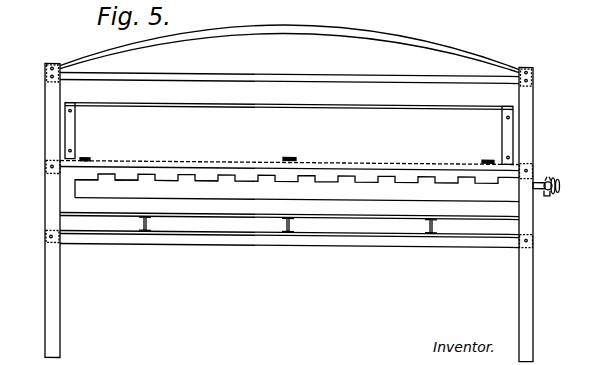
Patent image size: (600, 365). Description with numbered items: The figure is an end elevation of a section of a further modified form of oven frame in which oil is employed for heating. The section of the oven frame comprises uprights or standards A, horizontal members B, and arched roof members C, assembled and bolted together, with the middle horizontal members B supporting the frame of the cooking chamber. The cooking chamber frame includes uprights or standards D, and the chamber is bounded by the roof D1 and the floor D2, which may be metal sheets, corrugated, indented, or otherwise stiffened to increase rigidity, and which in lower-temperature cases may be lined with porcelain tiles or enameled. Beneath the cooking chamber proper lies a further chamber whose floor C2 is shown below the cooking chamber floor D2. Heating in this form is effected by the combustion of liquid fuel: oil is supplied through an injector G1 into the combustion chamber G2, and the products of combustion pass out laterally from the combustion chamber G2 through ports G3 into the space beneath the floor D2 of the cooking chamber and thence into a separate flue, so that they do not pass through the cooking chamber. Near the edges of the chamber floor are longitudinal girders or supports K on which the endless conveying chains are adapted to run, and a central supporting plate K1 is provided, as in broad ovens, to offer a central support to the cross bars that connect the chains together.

The uprights or standards A is at (60, 311).
The horizontal members B is at (232, 70).
The arched roof members C is at (362, 27).
The floor of a chamber beneath the cooking chamber C2 is at (348, 238).
The uprights or standards D is at (66, 124).
The roof D1 is at (352, 104).
The floor D2 is at (405, 159).
The injector G1 is at (550, 176).
The combustion chamber G2 is at (187, 185).
The ports G3 is at (128, 174).
The longitudinal girders or supports K is at (87, 157).
The central supporting plate K1 is at (291, 154).